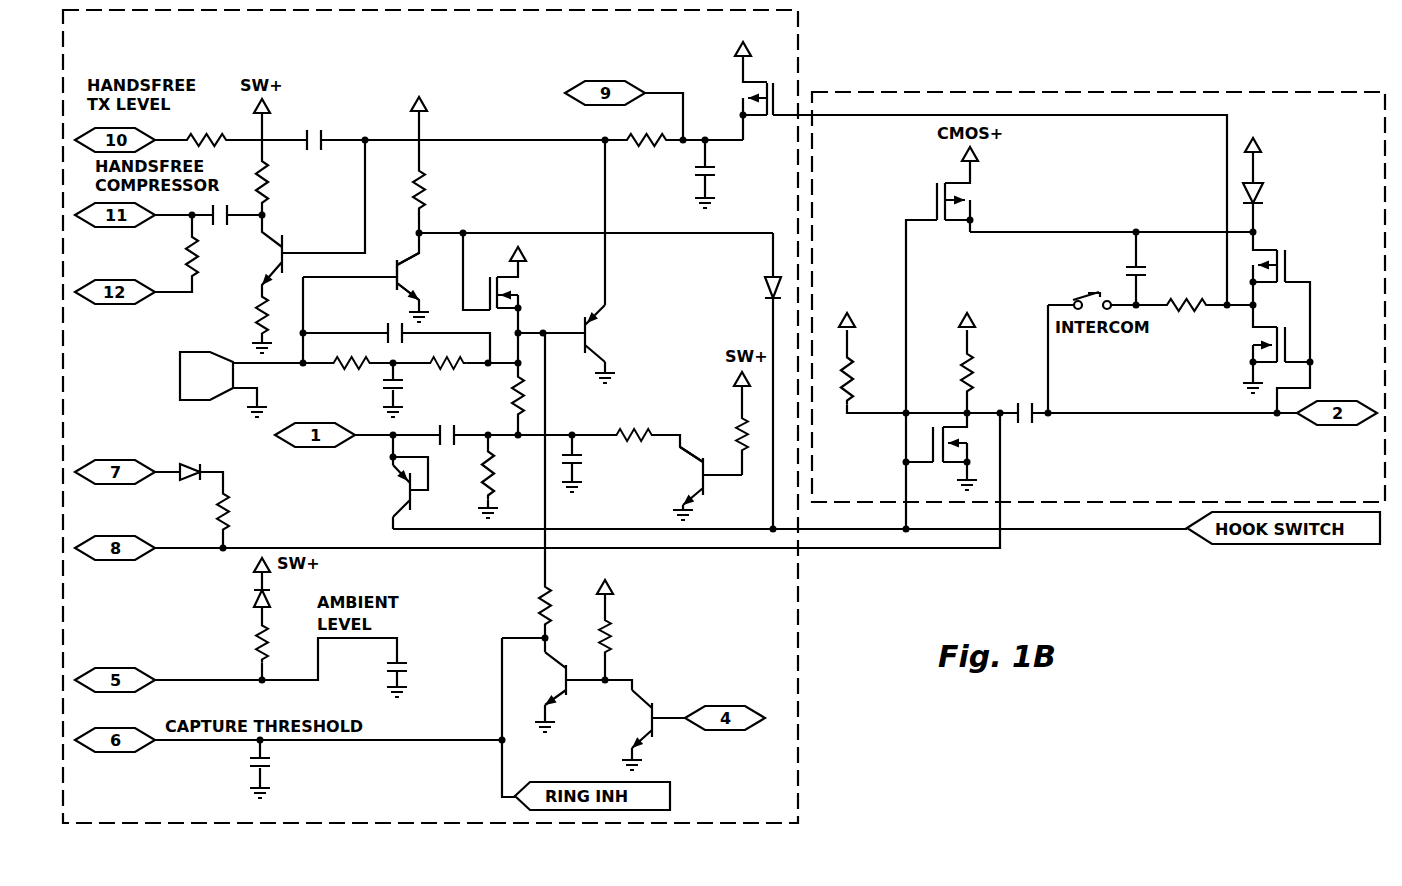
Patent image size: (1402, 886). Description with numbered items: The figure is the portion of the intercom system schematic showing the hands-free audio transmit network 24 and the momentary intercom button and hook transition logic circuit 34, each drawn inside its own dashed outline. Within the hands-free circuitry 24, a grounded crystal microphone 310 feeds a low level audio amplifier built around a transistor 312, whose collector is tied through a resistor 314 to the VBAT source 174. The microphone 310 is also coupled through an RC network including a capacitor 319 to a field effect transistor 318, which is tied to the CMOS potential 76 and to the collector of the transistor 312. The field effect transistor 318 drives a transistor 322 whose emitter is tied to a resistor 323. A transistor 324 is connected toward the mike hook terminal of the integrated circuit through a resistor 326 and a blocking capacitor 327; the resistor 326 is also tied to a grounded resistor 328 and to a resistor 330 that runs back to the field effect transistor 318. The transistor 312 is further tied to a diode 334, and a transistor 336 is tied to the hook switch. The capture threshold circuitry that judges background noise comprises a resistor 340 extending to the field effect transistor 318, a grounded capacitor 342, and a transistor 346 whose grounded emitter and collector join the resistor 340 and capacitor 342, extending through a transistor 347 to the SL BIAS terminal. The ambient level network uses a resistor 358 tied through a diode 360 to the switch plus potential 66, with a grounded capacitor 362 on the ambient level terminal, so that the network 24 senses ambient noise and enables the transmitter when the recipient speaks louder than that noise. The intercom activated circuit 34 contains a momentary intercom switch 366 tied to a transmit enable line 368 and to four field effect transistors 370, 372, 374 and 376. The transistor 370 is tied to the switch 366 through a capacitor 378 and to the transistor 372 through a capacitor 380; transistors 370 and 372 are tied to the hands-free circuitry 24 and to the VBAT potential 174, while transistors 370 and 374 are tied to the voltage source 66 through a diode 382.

The hands-free audio transmit network 24 is at (798, 44).
The momentary intercom button and hook transition logic circuit 34 is at (1345, 93).
The switch plus potential 66 is at (728, 55).
The battery potential 174 is at (427, 106).
The CMOS potential 76 is at (526, 252).
The resistor 314 is at (430, 180).
The transistor 312 is at (406, 268).
The field effect transistor 318 is at (528, 289).
The capacitor 319 is at (385, 326).
The transistor 322 is at (598, 334).
The resistor 323 is at (638, 148).
The diode 334 is at (764, 298).
The crystal microphone 310 is at (224, 388).
The resistor 330 is at (515, 390).
The resistor 326 is at (644, 432).
The blocking capacitor 327 is at (452, 444).
The resistor 328 is at (498, 460).
The transistor 324 is at (688, 482).
The transistor 336 is at (402, 490).
The resistor 340 is at (540, 602).
The transistor 346 is at (558, 686).
The transistor 347 is at (640, 725).
The capacitor 342 is at (250, 770).
The resistor 358 is at (250, 645).
The diode 360 is at (250, 597).
The capacitor 362 is at (407, 663).
The momentary intercom switch 366 is at (1083, 289).
The transmit enable line 368 is at (862, 550).
The field effect transistor 370 is at (970, 197).
The field effect transistor 372 is at (960, 418).
The field effect transistor 374 is at (1288, 268).
The field effect transistor 376 is at (1252, 351).
The capacitor 378 is at (1149, 281).
The capacitor 380 is at (1020, 408).
The diode 382 is at (1264, 203).